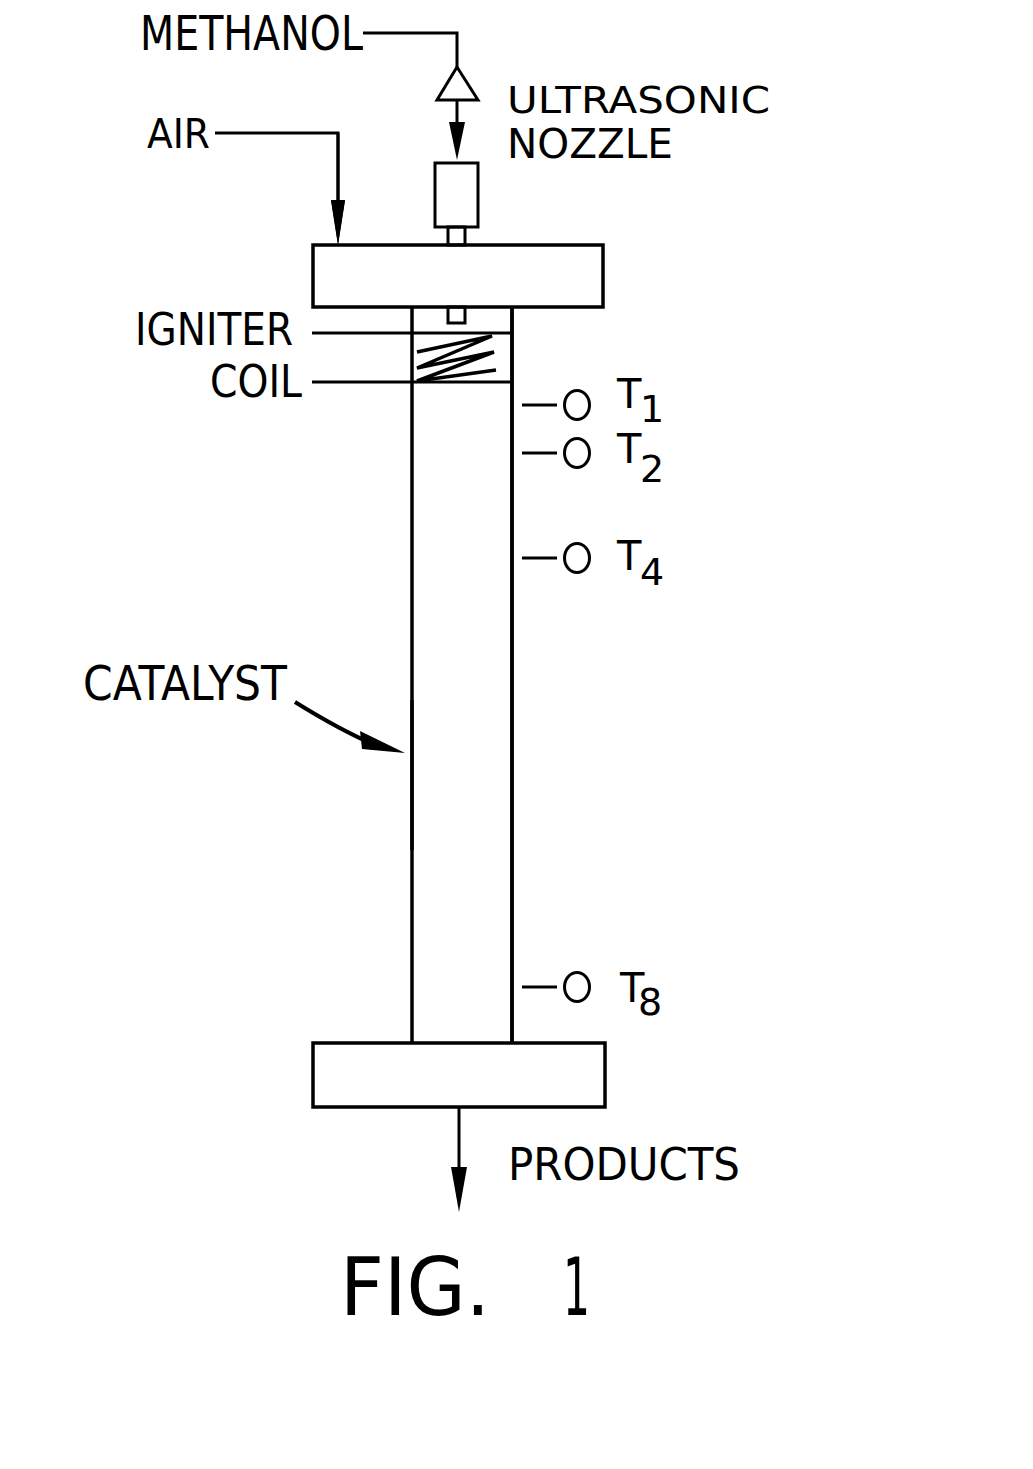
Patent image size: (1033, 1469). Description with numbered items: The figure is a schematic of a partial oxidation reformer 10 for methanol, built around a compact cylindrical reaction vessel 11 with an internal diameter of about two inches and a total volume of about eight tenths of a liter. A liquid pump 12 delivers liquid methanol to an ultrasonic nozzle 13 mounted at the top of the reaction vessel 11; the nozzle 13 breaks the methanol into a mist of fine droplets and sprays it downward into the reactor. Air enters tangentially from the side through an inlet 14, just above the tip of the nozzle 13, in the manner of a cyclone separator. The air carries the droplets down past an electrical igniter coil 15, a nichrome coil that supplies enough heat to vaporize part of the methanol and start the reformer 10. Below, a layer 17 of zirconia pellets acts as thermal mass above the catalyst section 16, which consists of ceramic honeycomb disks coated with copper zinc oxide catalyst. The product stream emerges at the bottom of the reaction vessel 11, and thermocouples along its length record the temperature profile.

The partial oxidation reformer 10 is at (770, 358).
The cylindrical reaction vessel 11 is at (550, 763).
The liquid pump 12 is at (465, 78).
The ultrasonic nozzle 13 is at (478, 188).
The inlet 14 is at (333, 218).
The igniter coil 15 is at (383, 382).
The catalyst section 16 is at (412, 790).
The layer of zirconia pellets 17 is at (512, 690).